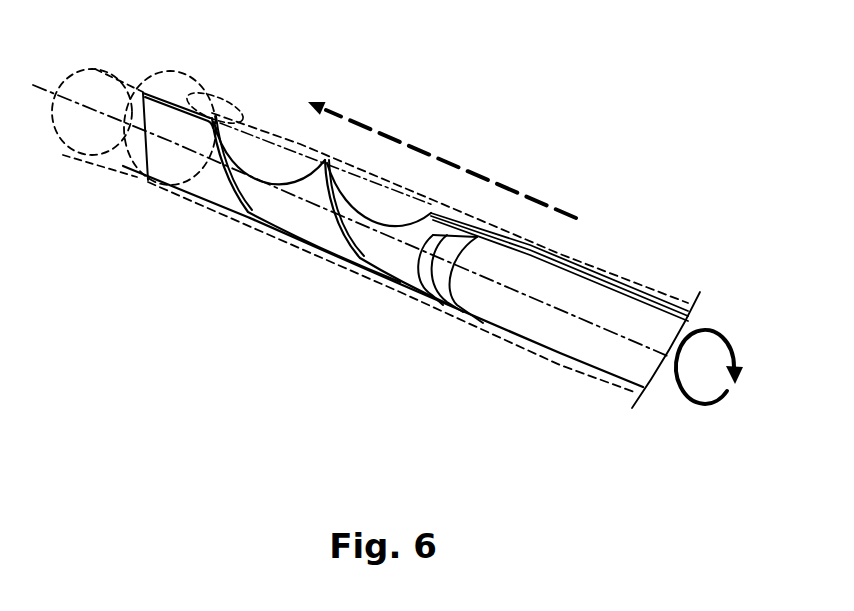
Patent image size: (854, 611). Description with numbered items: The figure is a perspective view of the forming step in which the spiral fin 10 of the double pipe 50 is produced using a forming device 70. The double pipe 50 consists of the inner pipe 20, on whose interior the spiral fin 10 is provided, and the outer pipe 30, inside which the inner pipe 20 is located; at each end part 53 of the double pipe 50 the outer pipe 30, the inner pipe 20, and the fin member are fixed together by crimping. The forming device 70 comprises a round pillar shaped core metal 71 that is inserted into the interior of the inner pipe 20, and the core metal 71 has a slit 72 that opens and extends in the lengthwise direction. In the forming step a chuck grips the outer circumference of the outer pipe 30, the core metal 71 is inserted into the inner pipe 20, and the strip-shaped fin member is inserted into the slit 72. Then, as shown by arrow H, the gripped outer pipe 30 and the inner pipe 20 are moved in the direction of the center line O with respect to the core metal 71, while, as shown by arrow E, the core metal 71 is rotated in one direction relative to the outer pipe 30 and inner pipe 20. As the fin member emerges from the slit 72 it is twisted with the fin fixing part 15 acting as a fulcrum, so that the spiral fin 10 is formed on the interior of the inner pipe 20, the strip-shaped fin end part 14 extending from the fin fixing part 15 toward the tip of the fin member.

The spiral fin 10 is at (284, 243).
The fin end part 14 is at (157, 113).
The fin fixing part 15 is at (172, 188).
The inner pipe 20 is at (62, 158).
The outer pipe 30 is at (127, 182).
The double pipe 50 is at (273, 124).
The end part 53 is at (212, 110).
The forming device 70 is at (628, 190).
The core metal 71 is at (527, 343).
The slit 72 is at (517, 256).
The center line O is at (38, 87).
The arrow H is at (395, 134).
The arrow E is at (719, 331).